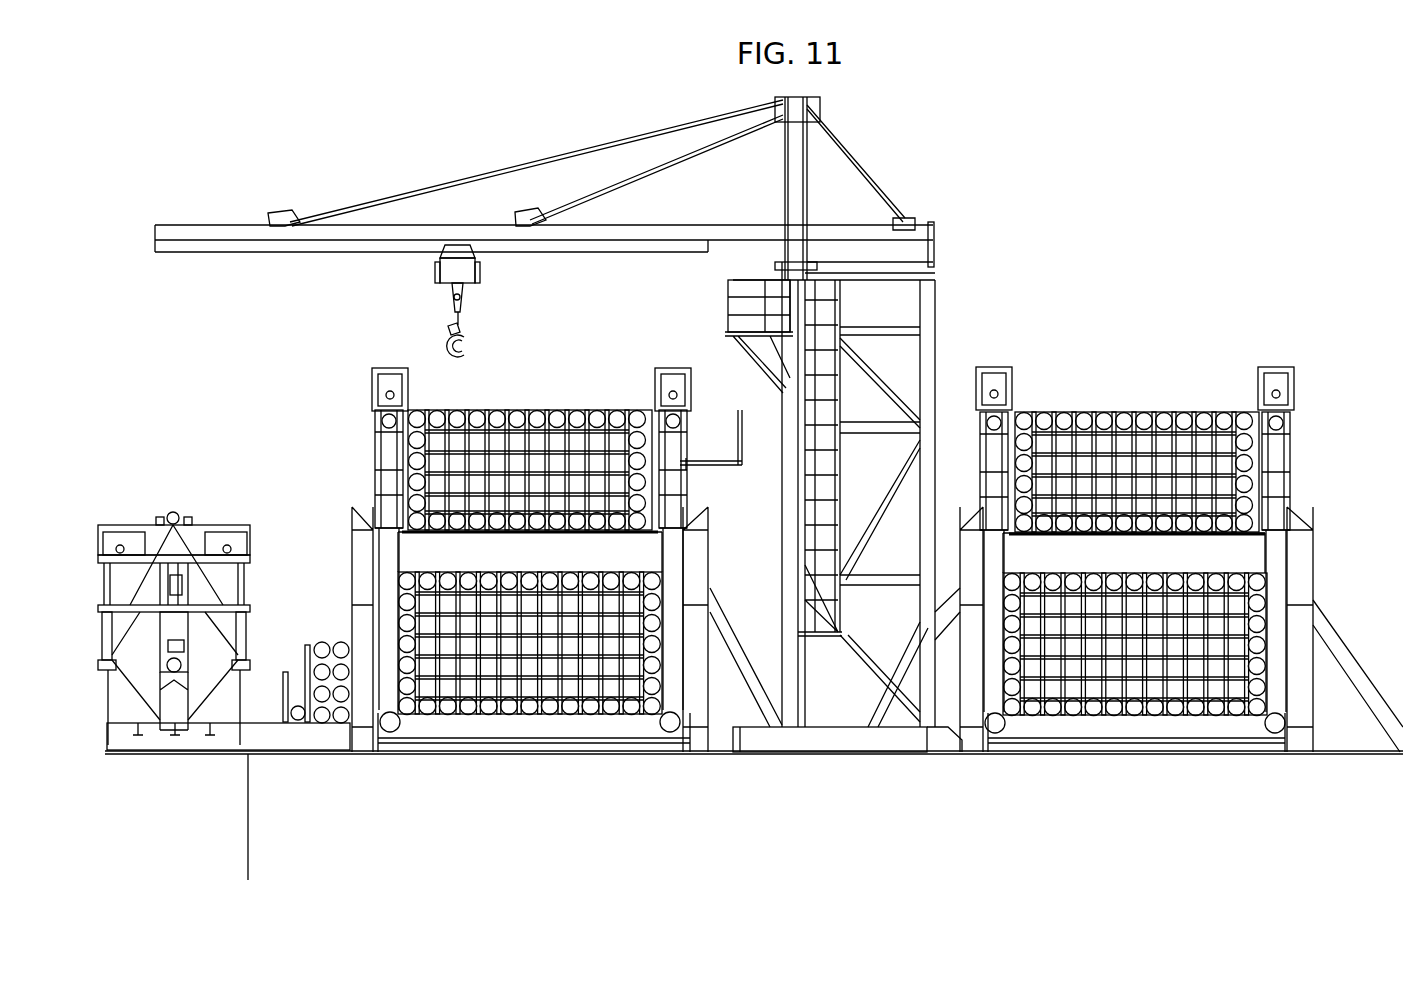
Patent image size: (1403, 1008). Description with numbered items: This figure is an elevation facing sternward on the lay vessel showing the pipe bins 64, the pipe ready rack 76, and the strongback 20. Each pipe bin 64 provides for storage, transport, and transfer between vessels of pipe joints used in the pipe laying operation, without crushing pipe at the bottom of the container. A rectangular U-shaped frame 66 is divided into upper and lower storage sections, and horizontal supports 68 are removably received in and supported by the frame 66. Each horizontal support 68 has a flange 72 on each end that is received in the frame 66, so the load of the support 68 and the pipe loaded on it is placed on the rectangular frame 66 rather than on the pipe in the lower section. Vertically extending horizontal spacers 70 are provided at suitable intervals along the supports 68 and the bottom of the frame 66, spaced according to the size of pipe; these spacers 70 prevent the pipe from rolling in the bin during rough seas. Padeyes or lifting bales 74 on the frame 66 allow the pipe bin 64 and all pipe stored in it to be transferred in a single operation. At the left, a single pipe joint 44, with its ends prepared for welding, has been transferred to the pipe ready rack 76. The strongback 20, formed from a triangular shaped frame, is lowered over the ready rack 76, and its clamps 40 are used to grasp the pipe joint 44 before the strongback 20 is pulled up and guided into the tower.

The strongback 20 is at (210, 620).
The clamps 40 is at (225, 676).
The pipe joint 44 is at (296, 700).
The pipe bins 64 is at (850, 531).
The rectangular U-shaped frame 66 is at (362, 455).
The horizontal supports 68 is at (832, 533).
The horizontal spacers 70 is at (482, 410).
The flange 72 is at (400, 556).
The padeyes or lifting bales 74 is at (392, 368).
The pipe ready rack 76 is at (118, 688).